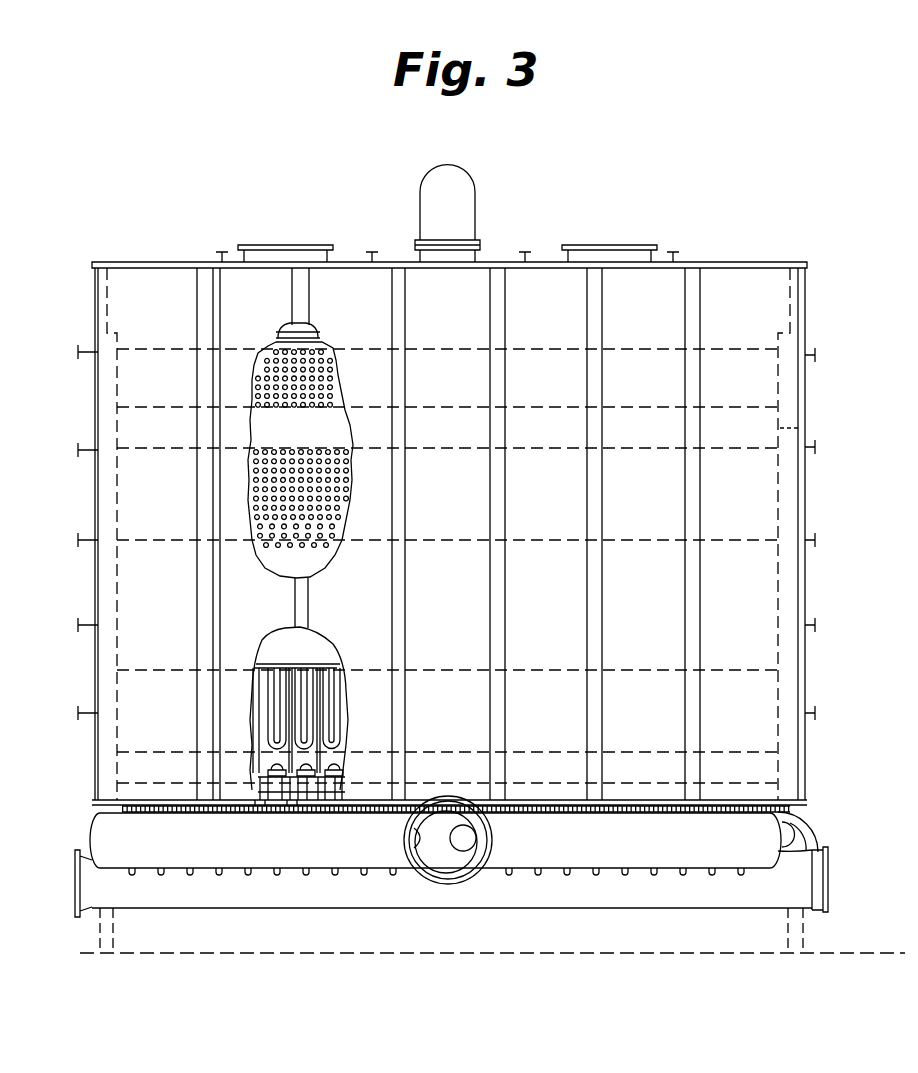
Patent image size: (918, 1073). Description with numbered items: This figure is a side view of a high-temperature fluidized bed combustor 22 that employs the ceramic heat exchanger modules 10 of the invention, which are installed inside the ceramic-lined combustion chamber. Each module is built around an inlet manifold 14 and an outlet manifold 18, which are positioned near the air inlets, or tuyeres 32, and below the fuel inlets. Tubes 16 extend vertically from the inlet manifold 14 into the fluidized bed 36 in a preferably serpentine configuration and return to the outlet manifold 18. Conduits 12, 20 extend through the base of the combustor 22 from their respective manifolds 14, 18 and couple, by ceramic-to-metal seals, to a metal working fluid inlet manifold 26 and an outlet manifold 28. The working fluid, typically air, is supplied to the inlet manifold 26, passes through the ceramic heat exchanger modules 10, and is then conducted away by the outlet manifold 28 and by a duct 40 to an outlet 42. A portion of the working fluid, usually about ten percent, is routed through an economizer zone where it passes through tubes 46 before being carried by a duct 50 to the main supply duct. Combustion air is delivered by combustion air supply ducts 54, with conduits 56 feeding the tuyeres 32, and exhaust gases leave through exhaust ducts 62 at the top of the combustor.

The ceramic heat exchanger module 10 is at (279, 669).
The conduit 12 is at (293, 800).
The inlet manifold 14 is at (315, 770).
The tubes 16 is at (288, 668).
The outlet manifold 18 is at (262, 778).
The conduit 20 is at (263, 795).
The fluidized bed combustor 22 is at (97, 520).
The working fluid inlet manifold 26 is at (806, 846).
The outlet manifold 28 is at (340, 795).
The tuyeres 32 is at (262, 763).
The fluidized bed 36 is at (318, 668).
The duct 40 is at (740, 852).
The outlet 42 is at (341, 470).
The tubes 46 is at (334, 447).
The duct 50 is at (465, 218).
The combustion air supply duct 54 is at (672, 897).
The conduits 56 is at (568, 870).
The exhaust duct 62 is at (292, 250).